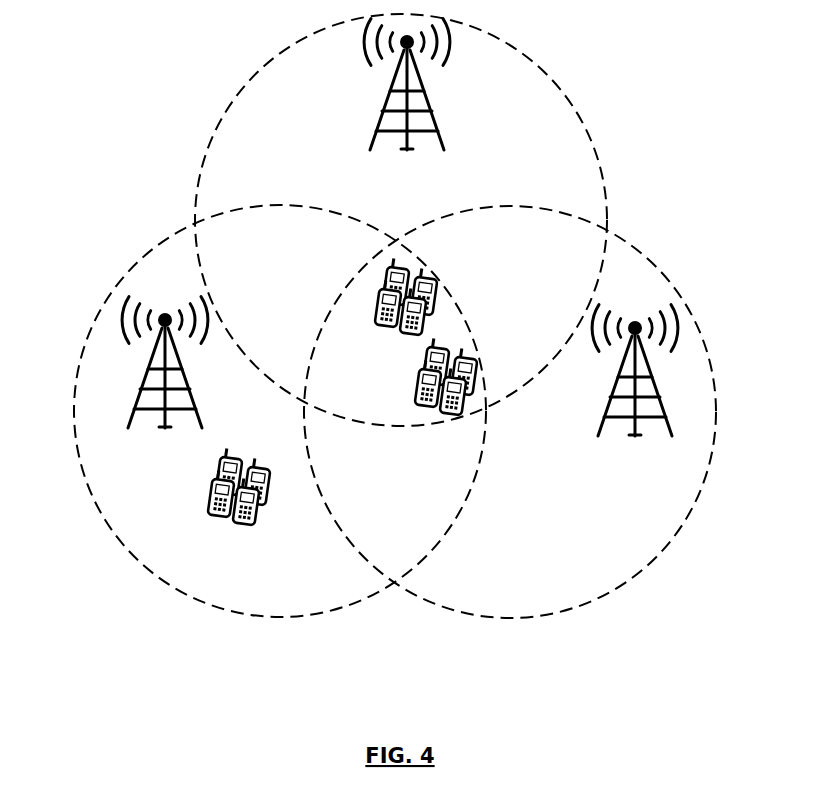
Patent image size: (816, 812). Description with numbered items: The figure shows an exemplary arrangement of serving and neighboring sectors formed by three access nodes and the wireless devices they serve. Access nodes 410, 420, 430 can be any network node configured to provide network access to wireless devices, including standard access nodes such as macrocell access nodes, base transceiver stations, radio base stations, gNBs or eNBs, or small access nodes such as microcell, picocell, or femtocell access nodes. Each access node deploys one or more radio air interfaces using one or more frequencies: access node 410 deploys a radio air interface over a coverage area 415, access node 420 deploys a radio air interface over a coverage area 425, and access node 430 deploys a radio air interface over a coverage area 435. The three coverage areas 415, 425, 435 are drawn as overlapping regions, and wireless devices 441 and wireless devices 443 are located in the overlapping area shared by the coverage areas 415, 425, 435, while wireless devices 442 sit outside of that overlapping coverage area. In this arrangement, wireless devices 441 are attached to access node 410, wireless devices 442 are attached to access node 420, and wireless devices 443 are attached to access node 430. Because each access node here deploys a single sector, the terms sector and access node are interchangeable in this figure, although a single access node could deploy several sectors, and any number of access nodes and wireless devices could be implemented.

The access node 410 is at (388, 110).
The coverage area 415 is at (233, 100).
The access node 420 is at (140, 410).
The coverage area 425 is at (92, 495).
The access node 430 is at (657, 410).
The coverage area 435 is at (698, 502).
The wireless devices 441 is at (367, 300).
The wireless devices 442 is at (253, 541).
The wireless devices 443 is at (443, 419).